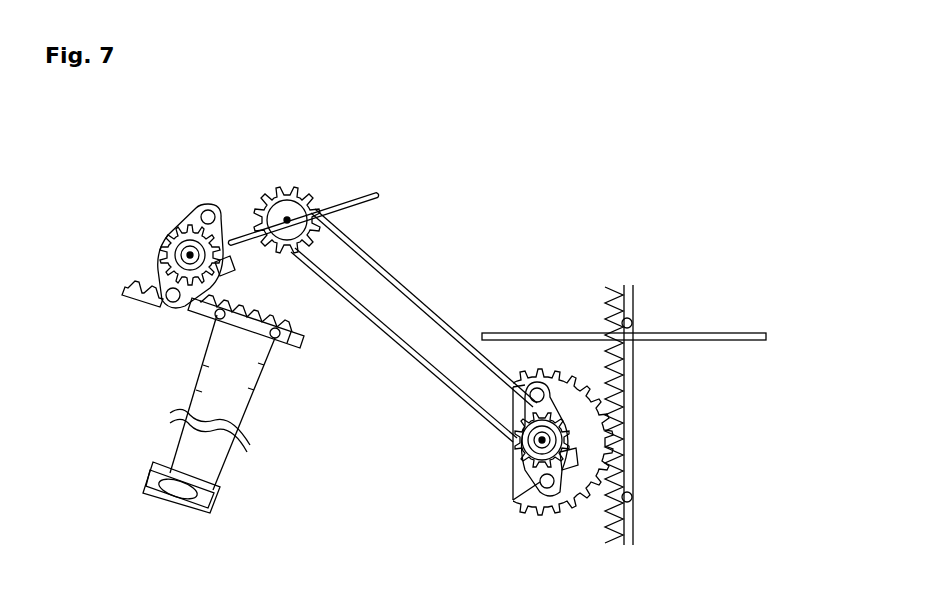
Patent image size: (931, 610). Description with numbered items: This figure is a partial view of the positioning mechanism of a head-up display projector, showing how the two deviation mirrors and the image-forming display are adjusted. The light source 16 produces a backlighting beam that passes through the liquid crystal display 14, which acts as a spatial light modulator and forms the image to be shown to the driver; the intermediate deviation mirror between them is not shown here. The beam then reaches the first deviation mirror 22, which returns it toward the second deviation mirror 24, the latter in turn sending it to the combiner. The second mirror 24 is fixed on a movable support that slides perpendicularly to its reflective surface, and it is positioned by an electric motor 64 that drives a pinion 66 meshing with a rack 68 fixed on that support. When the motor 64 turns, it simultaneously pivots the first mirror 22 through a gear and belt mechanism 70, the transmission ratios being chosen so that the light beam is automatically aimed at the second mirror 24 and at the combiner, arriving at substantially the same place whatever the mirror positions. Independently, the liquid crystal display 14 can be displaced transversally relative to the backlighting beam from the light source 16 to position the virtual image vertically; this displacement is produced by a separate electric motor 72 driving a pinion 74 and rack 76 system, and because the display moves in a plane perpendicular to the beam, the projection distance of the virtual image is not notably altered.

The liquid crystal display 14 is at (190, 310).
The light source 16 is at (157, 490).
The first deviation mirror 22 is at (367, 192).
The second deviation mirror 24 is at (757, 330).
The electric motor 64 is at (513, 500).
The pinion 66 is at (630, 502).
The rack 68 is at (630, 438).
The gear and belt mechanism 70 is at (320, 200).
The electric motor 72 is at (198, 212).
The pinion 74 is at (160, 247).
The rack 76 is at (135, 272).